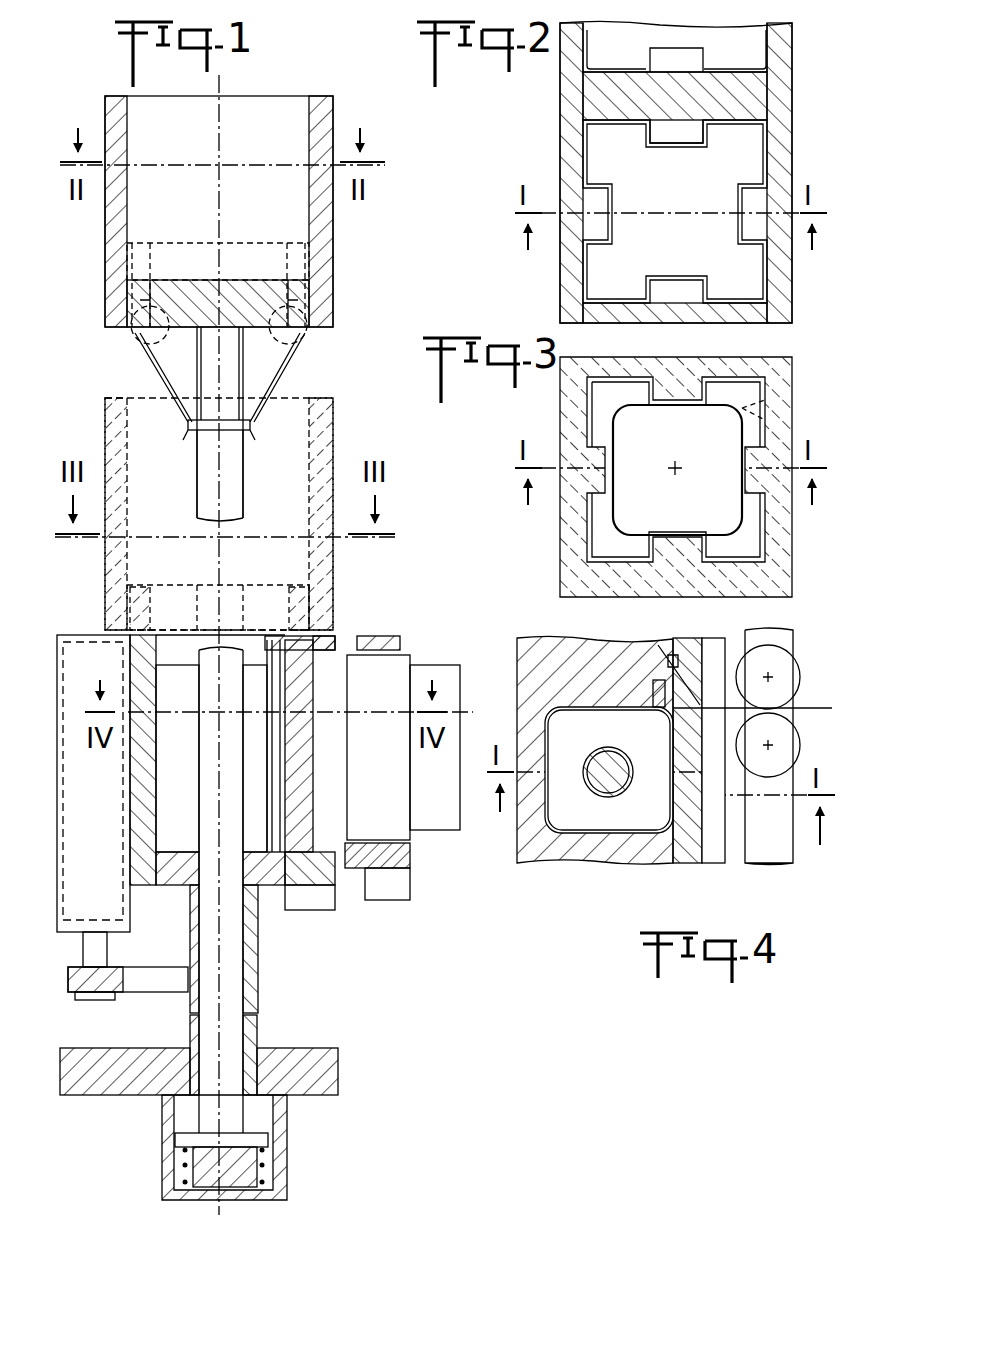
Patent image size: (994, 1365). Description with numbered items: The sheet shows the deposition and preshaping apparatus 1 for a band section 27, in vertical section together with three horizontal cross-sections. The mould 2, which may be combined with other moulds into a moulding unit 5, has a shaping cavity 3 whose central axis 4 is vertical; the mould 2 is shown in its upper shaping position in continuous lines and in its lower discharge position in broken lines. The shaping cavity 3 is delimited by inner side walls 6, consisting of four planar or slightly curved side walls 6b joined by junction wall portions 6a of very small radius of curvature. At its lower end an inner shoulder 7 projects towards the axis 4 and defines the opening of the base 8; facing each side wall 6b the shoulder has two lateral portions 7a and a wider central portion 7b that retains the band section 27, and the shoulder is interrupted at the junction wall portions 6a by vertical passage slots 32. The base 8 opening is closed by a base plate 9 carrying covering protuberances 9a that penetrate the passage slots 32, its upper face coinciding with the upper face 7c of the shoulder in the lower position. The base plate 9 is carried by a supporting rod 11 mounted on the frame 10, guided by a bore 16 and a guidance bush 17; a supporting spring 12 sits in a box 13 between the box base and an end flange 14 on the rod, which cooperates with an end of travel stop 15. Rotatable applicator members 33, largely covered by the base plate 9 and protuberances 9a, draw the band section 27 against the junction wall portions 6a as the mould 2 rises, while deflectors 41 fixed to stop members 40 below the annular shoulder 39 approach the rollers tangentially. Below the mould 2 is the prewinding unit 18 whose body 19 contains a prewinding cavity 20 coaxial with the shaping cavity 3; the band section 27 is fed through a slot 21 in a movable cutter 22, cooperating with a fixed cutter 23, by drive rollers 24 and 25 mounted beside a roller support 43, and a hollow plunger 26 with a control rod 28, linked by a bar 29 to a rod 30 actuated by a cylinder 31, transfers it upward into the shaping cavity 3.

In FIG. 1, the deposition and preshaping apparatus 1 is at (358, 570).
In FIG. 1, the mould 2 is at (331, 103).
In FIG. 1, the shaping cavity 3 is at (169, 138).
In FIG. 3, the shaping cavity 3 is at (595, 543).
In FIG. 1, the central axis 4 is at (222, 207).
In FIG. 3, the central axis 4 is at (673, 470).
In FIG. 2, the moulding unit 5 is at (570, 90).
In FIG. 1, the inner side walls 6 is at (306, 213).
In FIG. 2, the inner side walls 6 is at (683, 70).
In FIG. 3, the inner side walls 6 is at (595, 480).
In FIG. 2, the junction wall portions 6a is at (770, 122).
In FIG. 3, the junction wall portions 6a is at (590, 383).
In FIG. 2, the planar or slightly curved side wall 6b is at (610, 305).
In FIG. 3, the planar or slightly curved side wall 6b is at (767, 528).
In FIG. 1, the inner shoulder 7 is at (136, 286).
In FIG. 2, the inner shoulder 7 is at (664, 300).
In FIG. 2, the lateral portions 7a is at (740, 300).
In FIG. 3, the lateral portions 7a is at (737, 562).
In FIG. 2, the central portion 7b is at (692, 300).
In FIG. 3, the central portion 7b is at (670, 557).
In FIG. 1, the upper face of the inner shoulder 7c is at (300, 587).
In FIG. 1, the base 8 is at (295, 302).
In FIG. 2, the base 8 is at (760, 160).
In FIG. 1, the base plate 9 is at (195, 290).
In FIG. 2, the base plate 9 is at (675, 211).
In FIG. 1, the covering protuberances 9a is at (305, 250).
In FIG. 2, the covering protuberances 9a is at (590, 125).
In FIG. 1, the frame 10 is at (320, 1070).
In FIG. 1, the supporting rod 11 is at (235, 482).
In FIG. 4, the supporting rod 11 is at (608, 772).
In FIG. 1, the supporting spring 12 is at (265, 1167).
In FIG. 1, the box 13 is at (165, 1122).
In FIG. 1, the end flange 14 is at (179, 1156).
In FIG. 1, the end of travel stop 15 is at (188, 1142).
In FIG. 1, the bore 16 is at (243, 1055).
In FIG. 1, the guidance bush 17 is at (256, 1025).
In FIG. 1, the prewinding unit 18 is at (279, 917).
In FIG. 1, the body 19 is at (142, 822).
In FIG. 3, the body 19 is at (590, 420).
In FIG. 4, the body 19 is at (542, 635).
In FIG. 1, the prewinding cavity 20 is at (216, 648).
In FIG. 3, the prewinding cavity 20 is at (648, 403).
In FIG. 4, the prewinding cavity 20 is at (609, 770).
In FIG. 1, the slot 21 is at (280, 754).
In FIG. 4, the slot 21 is at (675, 672).
In FIG. 1, the movable cutter 22 is at (302, 815).
In FIG. 4, the movable cutter 22 is at (683, 861).
In FIG. 1, the fixed cutter 23 is at (278, 635).
In FIG. 4, the fixed cutter 23 is at (655, 695).
In FIG. 4, the drive roller 24 is at (798, 667).
In FIG. 4, the drive roller 25 is at (798, 760).
In FIG. 1, the plunger 26 is at (276, 882).
In FIG. 4, the plunger 26 is at (617, 833).
In FIG. 1, the band section 27 is at (161, 752).
In FIG. 1, the control rod 28 is at (262, 970).
In FIG. 1, the bar 29 is at (157, 987).
In FIG. 1, the rod 30 is at (107, 940).
In FIG. 1, the cylinder 31 is at (93, 783).
In FIG. 2, the passage slots 32 is at (770, 302).
In FIG. 3, the passage slots 32 is at (753, 385).
In FIG. 1, the applicator members 33 is at (138, 330).
In FIG. 1, the annular shoulder 39 is at (205, 437).
In FIG. 1, the stop members 40 is at (194, 430).
In FIG. 1, the deflectors 41 is at (283, 376).
In FIG. 1, the strip 43 is at (437, 840).
In FIG. 4, the strip 43 is at (793, 703).